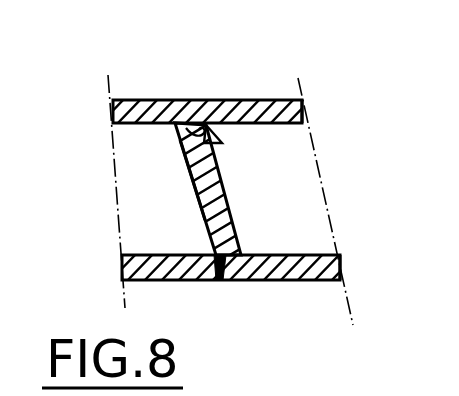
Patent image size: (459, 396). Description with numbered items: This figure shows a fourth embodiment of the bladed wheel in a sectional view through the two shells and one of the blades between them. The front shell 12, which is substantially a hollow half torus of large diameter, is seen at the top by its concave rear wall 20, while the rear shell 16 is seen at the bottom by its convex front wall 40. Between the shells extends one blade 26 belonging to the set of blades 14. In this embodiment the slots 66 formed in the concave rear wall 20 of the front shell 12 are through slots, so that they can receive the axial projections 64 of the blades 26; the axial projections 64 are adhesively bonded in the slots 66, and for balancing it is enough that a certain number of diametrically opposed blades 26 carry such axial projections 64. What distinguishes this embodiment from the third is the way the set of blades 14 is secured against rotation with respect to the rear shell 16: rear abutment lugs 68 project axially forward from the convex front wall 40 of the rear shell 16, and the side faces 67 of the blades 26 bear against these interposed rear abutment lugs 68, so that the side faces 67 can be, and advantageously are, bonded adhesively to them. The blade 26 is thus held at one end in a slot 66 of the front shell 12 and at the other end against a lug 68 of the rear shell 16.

The front shell 12 is at (316, 284).
The set of blades 14 is at (234, 215).
The rear shell 16 is at (250, 99).
The concave rear wall 20 is at (313, 255).
The blade 26 is at (180, 168).
The convex front wall 40 is at (287, 126).
The axial projection 64 is at (230, 266).
The slot 66 is at (225, 277).
The side face 67 is at (198, 134).
The rear abutment lug 68 is at (212, 130).